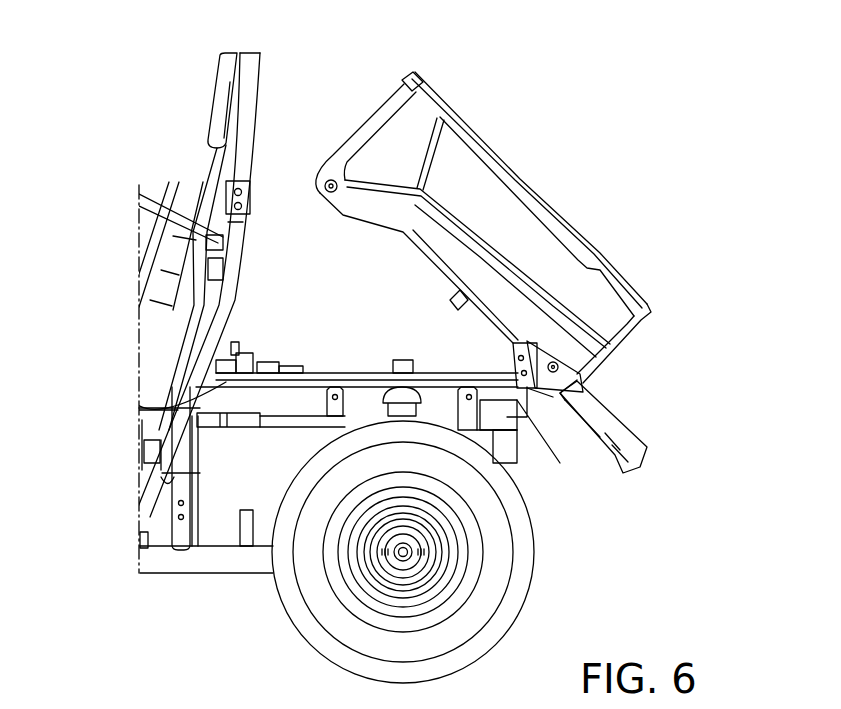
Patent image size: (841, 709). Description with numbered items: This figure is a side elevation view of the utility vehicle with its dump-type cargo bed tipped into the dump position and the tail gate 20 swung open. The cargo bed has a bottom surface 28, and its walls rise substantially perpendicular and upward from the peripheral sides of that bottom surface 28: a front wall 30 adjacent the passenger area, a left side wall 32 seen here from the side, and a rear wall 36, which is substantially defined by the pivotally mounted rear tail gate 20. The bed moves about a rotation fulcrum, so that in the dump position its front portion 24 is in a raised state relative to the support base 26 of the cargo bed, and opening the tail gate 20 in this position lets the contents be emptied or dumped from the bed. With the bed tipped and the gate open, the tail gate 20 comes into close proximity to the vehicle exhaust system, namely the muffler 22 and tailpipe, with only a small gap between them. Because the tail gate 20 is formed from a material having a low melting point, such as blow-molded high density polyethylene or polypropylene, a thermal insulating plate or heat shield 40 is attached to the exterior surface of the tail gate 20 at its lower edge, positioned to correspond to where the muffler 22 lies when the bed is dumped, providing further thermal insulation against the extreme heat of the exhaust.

The rear tail gate 20 is at (600, 430).
The muffler 22 is at (540, 425).
The front portion 24 is at (318, 174).
The support base 26 is at (139, 408).
The bottom surface 28 is at (420, 252).
The front wall 30 is at (358, 138).
The left side wall 32 is at (473, 178).
The rear wall 36 is at (648, 318).
The heat shield 40 is at (577, 379).